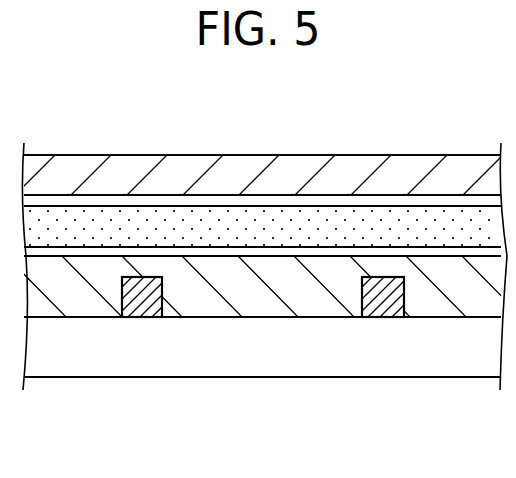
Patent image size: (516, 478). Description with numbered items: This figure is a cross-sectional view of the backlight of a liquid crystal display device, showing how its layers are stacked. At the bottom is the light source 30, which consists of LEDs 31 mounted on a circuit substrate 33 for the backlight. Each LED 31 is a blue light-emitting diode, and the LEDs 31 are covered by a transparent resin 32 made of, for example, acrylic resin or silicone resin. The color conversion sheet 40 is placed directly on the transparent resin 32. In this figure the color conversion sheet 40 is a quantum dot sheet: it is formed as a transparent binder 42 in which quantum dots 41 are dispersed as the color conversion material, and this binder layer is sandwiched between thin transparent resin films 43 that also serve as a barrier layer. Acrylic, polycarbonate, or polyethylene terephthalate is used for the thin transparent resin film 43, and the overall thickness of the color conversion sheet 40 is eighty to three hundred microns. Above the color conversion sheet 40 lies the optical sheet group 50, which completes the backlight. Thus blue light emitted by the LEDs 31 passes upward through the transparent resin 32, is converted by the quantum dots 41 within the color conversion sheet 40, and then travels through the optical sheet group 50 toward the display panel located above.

The light source 30 is at (261, 367).
The LED 31 is at (382, 307).
The transparent resin 32 is at (424, 305).
The circuit substrate 33 is at (366, 432).
The color conversion sheet 40 is at (262, 154).
The quantum dots 41 is at (325, 218).
The transparent binder 42 is at (370, 218).
The thin transparent resin film 43 is at (410, 250).
The optical sheet group 50 is at (474, 163).